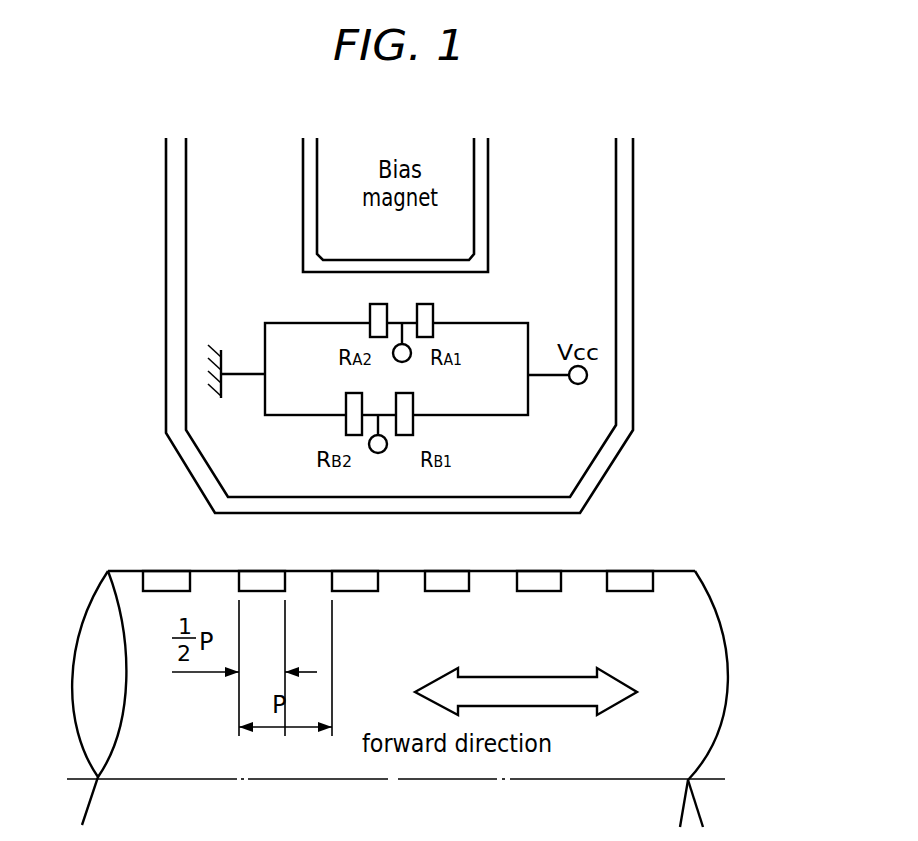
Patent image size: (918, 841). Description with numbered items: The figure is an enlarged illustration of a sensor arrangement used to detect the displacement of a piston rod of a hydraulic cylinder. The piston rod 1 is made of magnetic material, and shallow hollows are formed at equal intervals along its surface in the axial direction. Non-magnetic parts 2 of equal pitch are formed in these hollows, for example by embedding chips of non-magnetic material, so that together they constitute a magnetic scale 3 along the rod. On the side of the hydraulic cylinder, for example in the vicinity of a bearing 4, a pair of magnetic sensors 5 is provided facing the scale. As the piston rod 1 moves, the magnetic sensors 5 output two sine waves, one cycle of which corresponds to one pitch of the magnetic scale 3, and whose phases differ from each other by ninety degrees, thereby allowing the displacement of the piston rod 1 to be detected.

The piston rod 1 is at (703, 640).
The non-magnetic parts 2 is at (160, 571).
The magnetic scale 3 is at (255, 563).
The bearing 4 is at (627, 296).
The magnetic sensors 5 is at (160, 295).